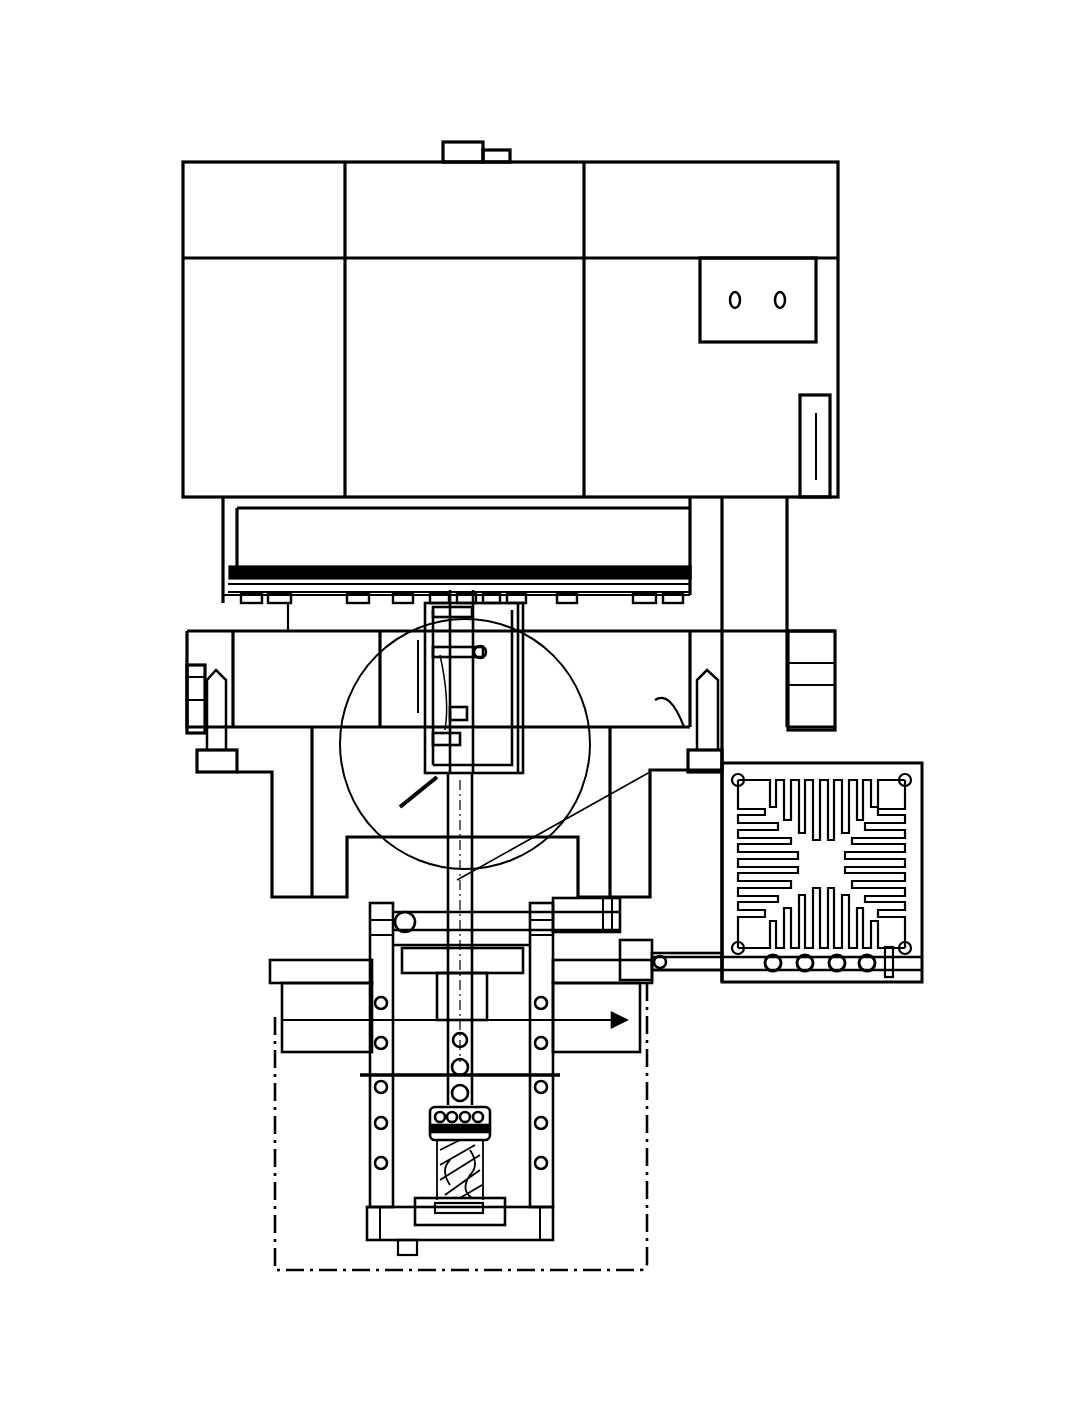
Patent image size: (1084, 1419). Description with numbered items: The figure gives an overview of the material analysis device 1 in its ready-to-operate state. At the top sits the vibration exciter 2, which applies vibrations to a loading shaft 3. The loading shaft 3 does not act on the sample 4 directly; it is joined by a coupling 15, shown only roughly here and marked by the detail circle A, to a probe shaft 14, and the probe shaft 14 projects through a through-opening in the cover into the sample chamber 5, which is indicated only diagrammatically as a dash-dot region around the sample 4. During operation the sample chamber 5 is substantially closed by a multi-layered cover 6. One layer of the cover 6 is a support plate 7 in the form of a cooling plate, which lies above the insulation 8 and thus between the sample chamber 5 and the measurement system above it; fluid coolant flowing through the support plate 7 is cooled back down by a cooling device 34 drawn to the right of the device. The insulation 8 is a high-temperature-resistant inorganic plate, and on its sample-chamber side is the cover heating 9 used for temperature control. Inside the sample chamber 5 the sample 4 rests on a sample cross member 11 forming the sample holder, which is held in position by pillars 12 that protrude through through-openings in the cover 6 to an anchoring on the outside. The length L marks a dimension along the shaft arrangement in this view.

The material analysis device 1 is at (737, 98).
The vibration exciter 2 is at (462, 300).
The loading shaft 3 is at (250, 632).
The sample 4 is at (460, 1222).
The sample chamber 5 is at (338, 1258).
The cover 6 is at (263, 1005).
The support plate 7 is at (627, 963).
The insulation 8 is at (273, 1008).
The cover heating 9 is at (273, 1038).
The sample cross member 11 is at (515, 1223).
The pillars 12 is at (380, 1150).
The probe shaft 14 is at (457, 880).
The coupling 15 is at (397, 757).
The cooling device 34 is at (805, 880).
The detail circle A is at (472, 744).
The length line L is at (650, 772).